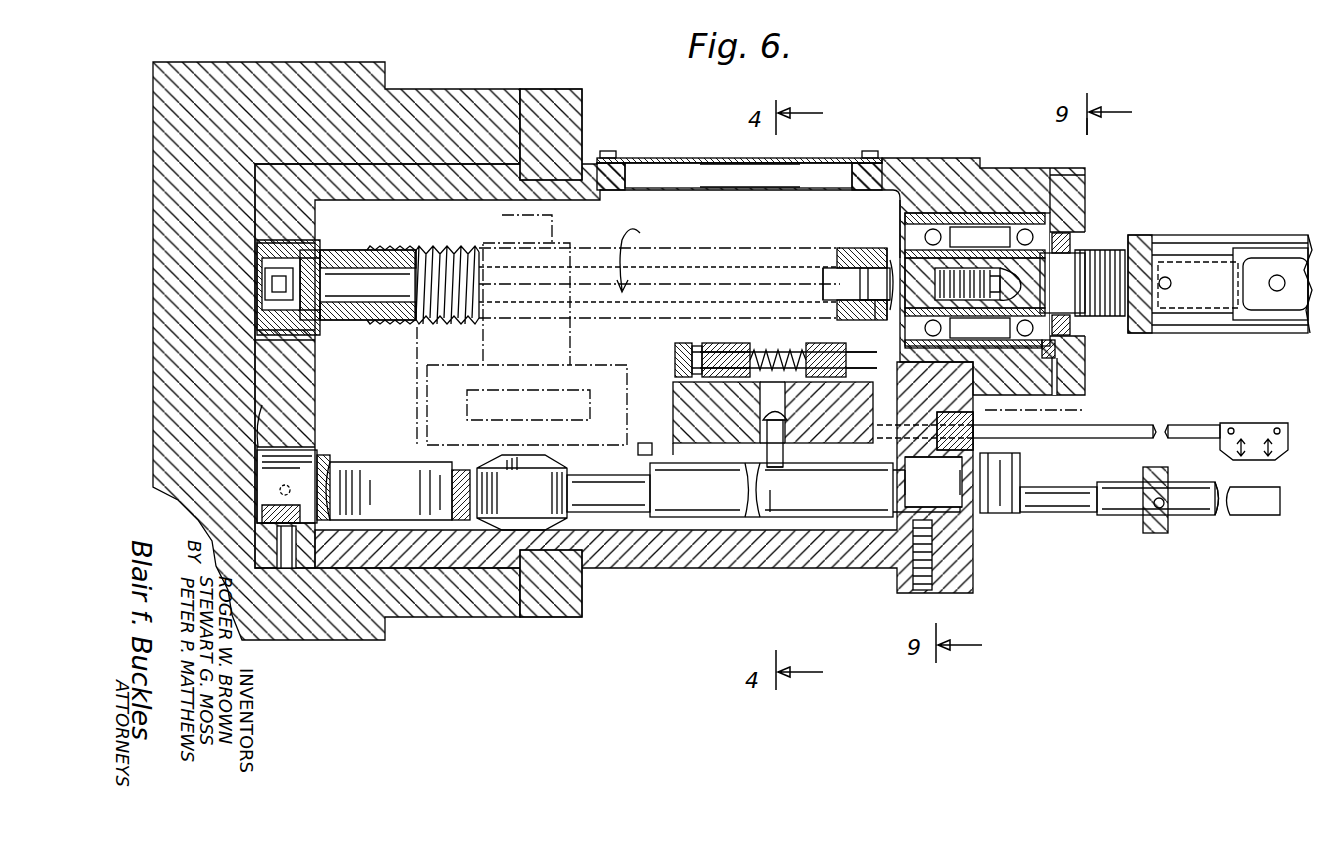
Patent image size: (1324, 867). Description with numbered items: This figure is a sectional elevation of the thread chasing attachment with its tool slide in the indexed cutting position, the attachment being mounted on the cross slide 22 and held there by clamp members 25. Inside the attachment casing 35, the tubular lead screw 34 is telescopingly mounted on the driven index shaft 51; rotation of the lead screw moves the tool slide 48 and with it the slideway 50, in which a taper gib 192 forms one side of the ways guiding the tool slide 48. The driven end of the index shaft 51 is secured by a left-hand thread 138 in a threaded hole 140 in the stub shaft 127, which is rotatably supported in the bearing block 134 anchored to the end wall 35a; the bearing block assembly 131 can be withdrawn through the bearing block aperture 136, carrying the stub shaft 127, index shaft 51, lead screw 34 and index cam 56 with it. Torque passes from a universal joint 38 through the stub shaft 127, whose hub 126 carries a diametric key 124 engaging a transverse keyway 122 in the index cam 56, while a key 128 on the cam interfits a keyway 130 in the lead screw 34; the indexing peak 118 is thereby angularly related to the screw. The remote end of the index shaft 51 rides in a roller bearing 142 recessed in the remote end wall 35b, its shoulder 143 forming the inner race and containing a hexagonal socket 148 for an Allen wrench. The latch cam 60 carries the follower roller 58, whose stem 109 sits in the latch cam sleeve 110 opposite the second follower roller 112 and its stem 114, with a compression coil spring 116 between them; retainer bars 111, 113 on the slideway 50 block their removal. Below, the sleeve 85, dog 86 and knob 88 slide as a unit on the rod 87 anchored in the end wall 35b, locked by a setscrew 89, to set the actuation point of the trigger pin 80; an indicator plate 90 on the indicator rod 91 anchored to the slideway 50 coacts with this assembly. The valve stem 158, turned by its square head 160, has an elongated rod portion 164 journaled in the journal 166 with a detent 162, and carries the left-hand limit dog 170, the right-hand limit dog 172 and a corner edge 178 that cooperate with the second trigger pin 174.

The cross slide 22 is at (437, 90).
The clamp members 25 is at (553, 92).
The lead screw 34 is at (445, 252).
The attachment casing 35 is at (644, 570).
The end wall 35a is at (980, 444).
The remote end wall 35b is at (316, 362).
The universal joint 38 is at (1176, 236).
The tool slide 48 is at (483, 334).
The slideway 50 is at (585, 365).
The index shaft 51 is at (368, 285).
The index cam 56 is at (850, 236).
The follower roller 58 is at (858, 443).
The latch cam 60 is at (776, 345).
The trigger pin 80 is at (768, 492).
The sleeve 85 is at (608, 520).
The dog 86 is at (522, 492).
The rod 87 is at (1238, 516).
The knob 88 is at (1152, 533).
The setscrew 89 is at (1164, 506).
The indicator plate 90 is at (1275, 446).
The indicator rod 91 is at (890, 422).
The stem 109 is at (812, 350).
The latch cam sleeve 110 is at (842, 335).
The retainer bar 111 is at (878, 340).
The second latch cam follower roller 112 is at (690, 372).
The retainer bar 113 is at (675, 355).
The stem 114 is at (700, 343).
The compression coil spring 116 is at (753, 342).
The indexing peak 118 is at (876, 316).
The transverse keyway 122 is at (866, 268).
The diametric key 124 is at (890, 262).
The hub 126 is at (900, 210).
The stub shaft 127 is at (1070, 232).
The diametric key 128 is at (835, 268).
The keyway 130 is at (825, 268).
The bearing block assembly 131 is at (1090, 150).
The bearing block 134 is at (1048, 166).
The bearing block aperture 136 is at (955, 262).
The left-hand thread 138 is at (960, 265).
The threaded hole 140 is at (1010, 284).
The roller bearing 142 is at (275, 330).
The shoulder 143 is at (270, 312).
The hexagonal socket 148 is at (268, 275).
The valve stem 158 is at (920, 530).
The square head 160 is at (1012, 500).
The detent 162 is at (284, 568).
The elongated rod portion 164 is at (338, 462).
The journal 166 is at (265, 447).
The left-hand limit dog 170 is at (745, 490).
The right-hand limit dog 172 is at (448, 468).
The second trigger pin 174 is at (767, 457).
The corner edge 178 is at (374, 460).
The taper gib 192 is at (675, 430).